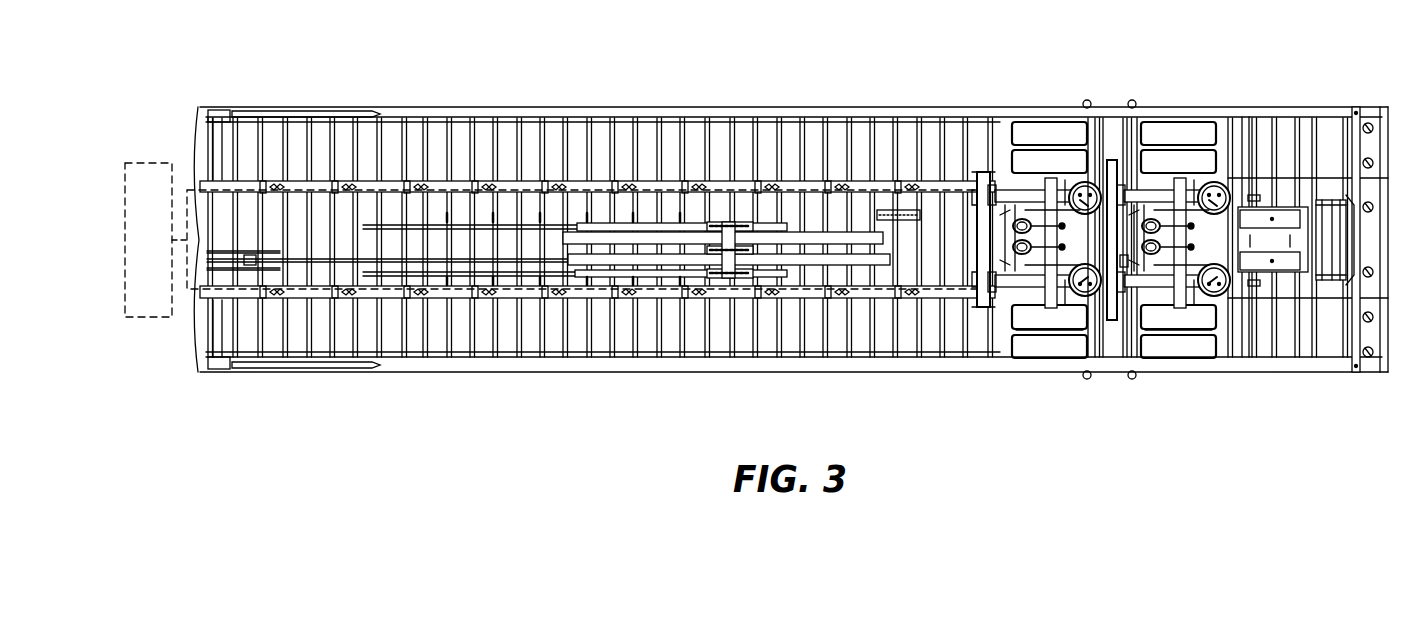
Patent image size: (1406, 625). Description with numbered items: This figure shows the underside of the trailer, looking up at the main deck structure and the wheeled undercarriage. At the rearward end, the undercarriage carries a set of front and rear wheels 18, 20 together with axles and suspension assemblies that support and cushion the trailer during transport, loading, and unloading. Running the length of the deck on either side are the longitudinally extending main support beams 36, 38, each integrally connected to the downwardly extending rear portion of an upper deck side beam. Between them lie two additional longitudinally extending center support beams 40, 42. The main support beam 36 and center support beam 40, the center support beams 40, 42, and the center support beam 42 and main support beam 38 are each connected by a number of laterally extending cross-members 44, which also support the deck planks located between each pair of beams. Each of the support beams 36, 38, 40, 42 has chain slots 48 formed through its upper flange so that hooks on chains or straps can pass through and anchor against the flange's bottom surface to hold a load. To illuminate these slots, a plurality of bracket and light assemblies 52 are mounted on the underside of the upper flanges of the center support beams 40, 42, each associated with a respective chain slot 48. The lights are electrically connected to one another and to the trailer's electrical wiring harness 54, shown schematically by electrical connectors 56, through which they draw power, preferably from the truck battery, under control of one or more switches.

The front wheels 18 is at (1052, 130).
The rear wheels 20 is at (1185, 130).
The main support beam 36 is at (650, 108).
The main support beam 38 is at (578, 367).
The center support beam 40 is at (297, 180).
The center support beam 42 is at (297, 298).
The cross-members 44 is at (377, 140).
The chain slots 48 is at (482, 185).
The bracket and light assemblies 52 is at (468, 185).
The electrical wiring harness 54 is at (147, 318).
The electrical connectors 56 is at (529, 190).